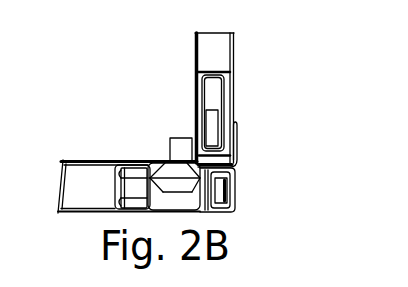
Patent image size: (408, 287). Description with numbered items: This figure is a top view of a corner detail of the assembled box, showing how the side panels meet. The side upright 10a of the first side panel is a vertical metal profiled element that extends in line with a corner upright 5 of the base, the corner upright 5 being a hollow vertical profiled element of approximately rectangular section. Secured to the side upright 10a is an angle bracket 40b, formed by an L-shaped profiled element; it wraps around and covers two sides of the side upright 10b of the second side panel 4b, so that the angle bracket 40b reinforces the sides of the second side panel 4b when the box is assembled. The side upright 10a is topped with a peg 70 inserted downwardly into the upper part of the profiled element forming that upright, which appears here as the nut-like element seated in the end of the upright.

The second side panel 4b is at (222, 46).
The side upright 10b is at (228, 88).
The angle bracket 40b is at (235, 147).
The corner upright 5 is at (228, 204).
The peg 70 is at (169, 168).
The side upright 10a is at (124, 162).